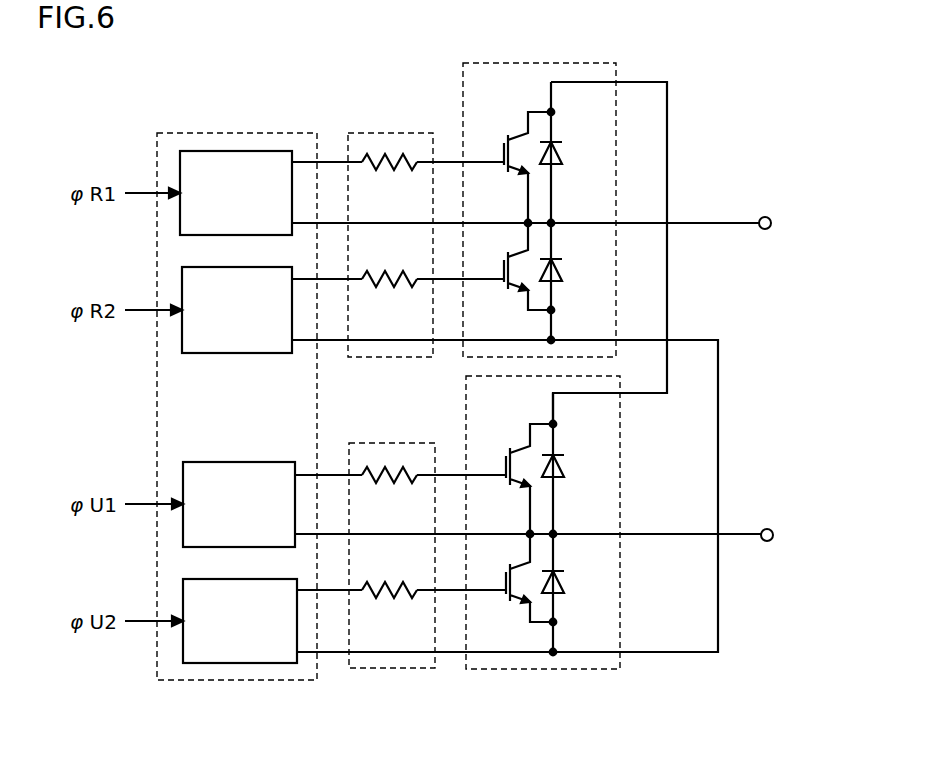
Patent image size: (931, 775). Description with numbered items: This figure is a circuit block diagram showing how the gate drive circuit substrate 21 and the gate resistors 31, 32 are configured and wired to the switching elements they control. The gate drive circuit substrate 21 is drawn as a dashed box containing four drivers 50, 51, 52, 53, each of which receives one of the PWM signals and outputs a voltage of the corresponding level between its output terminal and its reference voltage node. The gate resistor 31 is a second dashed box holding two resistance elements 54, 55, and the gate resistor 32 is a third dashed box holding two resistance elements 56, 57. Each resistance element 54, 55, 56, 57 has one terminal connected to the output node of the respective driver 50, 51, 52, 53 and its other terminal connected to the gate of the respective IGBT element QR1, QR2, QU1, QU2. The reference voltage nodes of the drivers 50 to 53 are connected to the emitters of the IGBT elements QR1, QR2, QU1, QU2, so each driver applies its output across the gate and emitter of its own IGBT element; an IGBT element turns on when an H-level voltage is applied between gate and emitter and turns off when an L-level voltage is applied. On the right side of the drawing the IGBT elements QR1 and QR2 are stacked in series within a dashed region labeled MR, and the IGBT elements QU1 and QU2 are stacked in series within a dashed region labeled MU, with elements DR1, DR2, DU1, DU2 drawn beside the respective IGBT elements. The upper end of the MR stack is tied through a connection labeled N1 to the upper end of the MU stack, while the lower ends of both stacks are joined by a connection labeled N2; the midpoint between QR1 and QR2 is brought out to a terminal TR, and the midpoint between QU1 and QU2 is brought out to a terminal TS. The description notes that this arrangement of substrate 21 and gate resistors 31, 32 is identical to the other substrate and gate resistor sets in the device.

The gate drive circuit substrate 21 is at (237, 133).
The gate resistor 31 is at (390, 133).
The gate resistor 32 is at (391, 443).
The driver 50 is at (180, 223).
The driver 51 is at (182, 340).
The driver 52 is at (183, 534).
The driver 53 is at (183, 651).
The resistance element 54 is at (386, 172).
The resistance element 55 is at (386, 289).
The resistance element 56 is at (387, 485).
The resistance element 57 is at (387, 600).
The R-phase module MR is at (540, 63).
The U-phase module MU is at (622, 497).
The node N1 is at (650, 82).
The node N2 is at (697, 340).
The R-phase terminal TR is at (765, 217).
The S-phase terminal TS is at (767, 529).
The IGBT element QR1 is at (522, 135).
The IGBT element QR2 is at (504, 286).
The IGBT element QU1 is at (522, 447).
The IGBT element QU2 is at (507, 598).
The diode DR1 is at (562, 158).
The diode DR2 is at (563, 267).
The diode DU1 is at (565, 470).
The diode DU2 is at (565, 580).